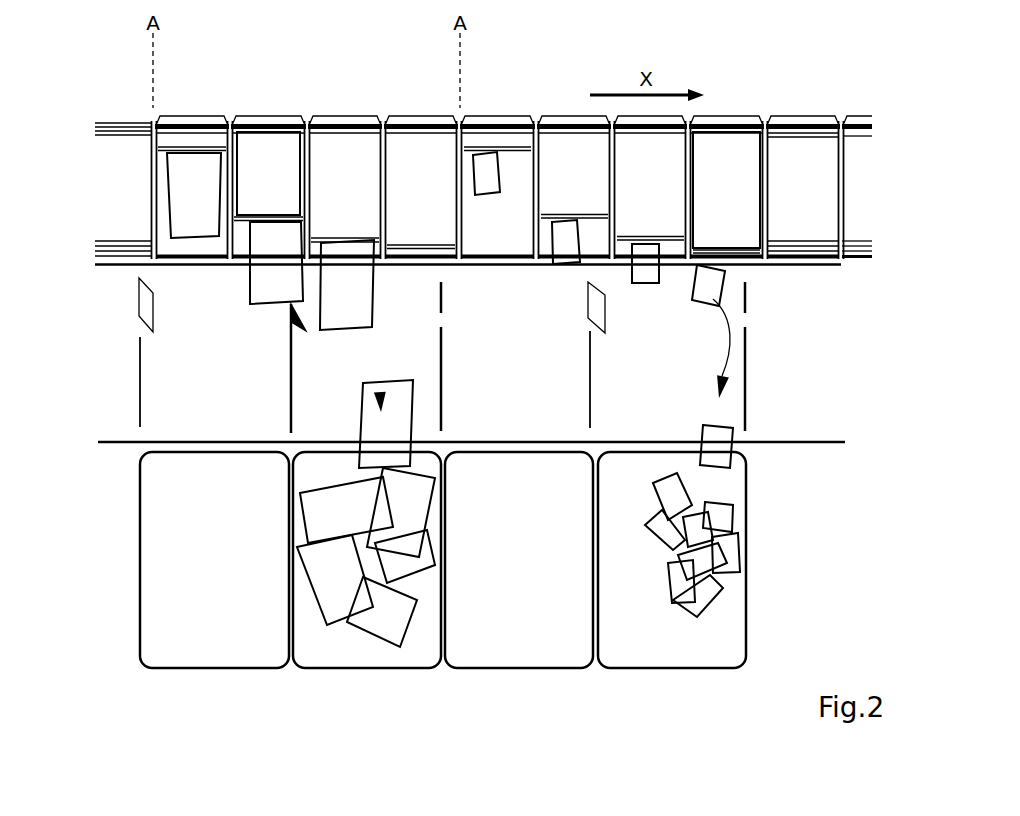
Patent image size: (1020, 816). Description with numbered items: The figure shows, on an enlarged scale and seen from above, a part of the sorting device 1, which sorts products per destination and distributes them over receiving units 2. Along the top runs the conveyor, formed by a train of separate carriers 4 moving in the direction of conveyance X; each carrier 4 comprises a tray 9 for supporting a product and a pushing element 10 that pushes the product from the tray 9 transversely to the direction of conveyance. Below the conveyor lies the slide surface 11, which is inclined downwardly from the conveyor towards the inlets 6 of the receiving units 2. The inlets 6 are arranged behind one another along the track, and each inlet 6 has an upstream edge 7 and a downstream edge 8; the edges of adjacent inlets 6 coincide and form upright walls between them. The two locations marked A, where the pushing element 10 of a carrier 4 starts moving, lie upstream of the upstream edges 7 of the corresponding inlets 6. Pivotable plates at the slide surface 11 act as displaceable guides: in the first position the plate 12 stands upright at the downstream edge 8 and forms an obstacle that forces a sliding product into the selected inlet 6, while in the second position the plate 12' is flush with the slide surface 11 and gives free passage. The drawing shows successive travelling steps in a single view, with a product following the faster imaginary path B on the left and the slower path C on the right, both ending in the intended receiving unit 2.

The sorting device 1 is at (866, 68).
The receiving units 2 is at (731, 481).
The carriers 4 is at (264, 150).
The inlet 6 is at (325, 356).
The upstream edge 7 is at (289, 386).
The downstream edge 8 is at (381, 398).
The tray 9 is at (290, 150).
The pushing element 10 is at (210, 147).
The slide surface 11 is at (512, 284).
The pivotable plate in first position 12 is at (627, 234).
The pivotable plate in second position 12' is at (180, 352).